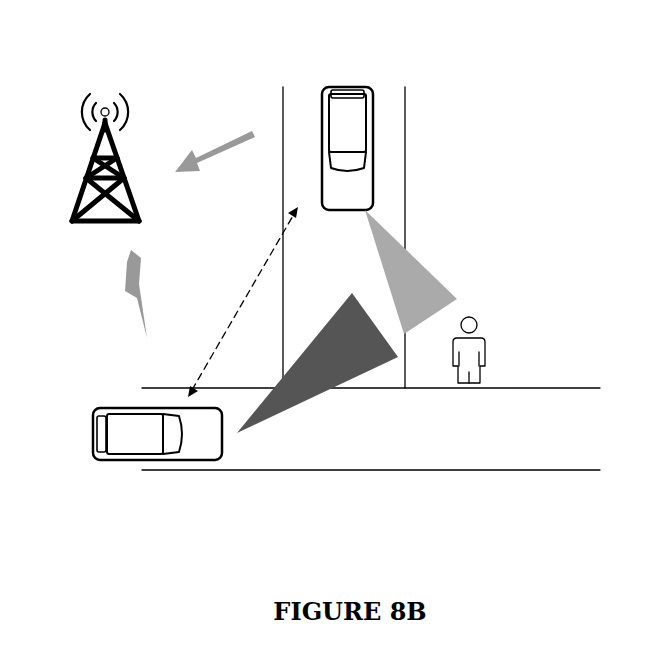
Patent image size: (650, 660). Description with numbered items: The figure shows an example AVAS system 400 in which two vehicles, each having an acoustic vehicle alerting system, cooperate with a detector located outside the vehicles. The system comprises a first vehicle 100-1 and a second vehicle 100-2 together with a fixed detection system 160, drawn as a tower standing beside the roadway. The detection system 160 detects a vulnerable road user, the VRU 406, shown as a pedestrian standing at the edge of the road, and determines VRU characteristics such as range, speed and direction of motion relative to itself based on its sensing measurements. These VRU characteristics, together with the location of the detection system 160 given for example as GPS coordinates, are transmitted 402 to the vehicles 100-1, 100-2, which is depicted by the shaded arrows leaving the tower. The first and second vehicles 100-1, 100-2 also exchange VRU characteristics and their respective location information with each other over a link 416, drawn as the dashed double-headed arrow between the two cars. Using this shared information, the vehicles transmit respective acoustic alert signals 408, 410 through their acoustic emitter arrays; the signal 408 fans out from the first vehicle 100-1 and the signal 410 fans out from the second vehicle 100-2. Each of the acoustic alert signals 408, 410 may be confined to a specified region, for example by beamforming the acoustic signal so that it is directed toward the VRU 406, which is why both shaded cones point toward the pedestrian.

The first vehicle 100-1 is at (348, 85).
The second vehicle 100-2 is at (125, 408).
The detection system 160 is at (122, 165).
The AVAS system 400 is at (370, 550).
The transmission of VRU characteristics 402 is at (228, 148).
The vulnerable road user (VRU) 406 is at (470, 316).
The acoustic alert signal 408 is at (423, 265).
The acoustic alert signal 410 is at (363, 373).
The communication link 416 is at (238, 310).